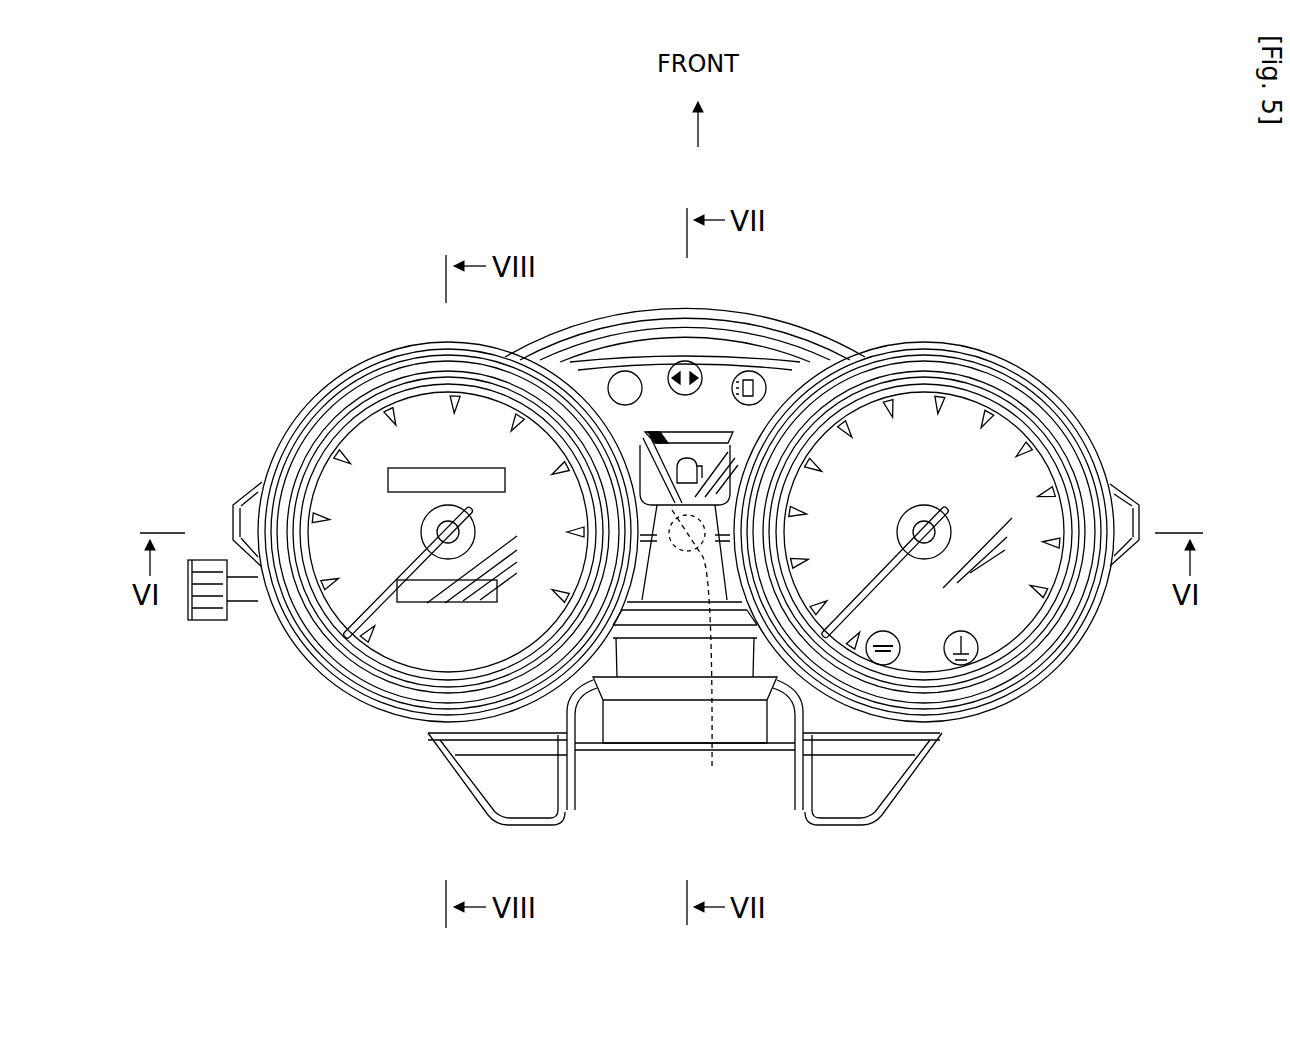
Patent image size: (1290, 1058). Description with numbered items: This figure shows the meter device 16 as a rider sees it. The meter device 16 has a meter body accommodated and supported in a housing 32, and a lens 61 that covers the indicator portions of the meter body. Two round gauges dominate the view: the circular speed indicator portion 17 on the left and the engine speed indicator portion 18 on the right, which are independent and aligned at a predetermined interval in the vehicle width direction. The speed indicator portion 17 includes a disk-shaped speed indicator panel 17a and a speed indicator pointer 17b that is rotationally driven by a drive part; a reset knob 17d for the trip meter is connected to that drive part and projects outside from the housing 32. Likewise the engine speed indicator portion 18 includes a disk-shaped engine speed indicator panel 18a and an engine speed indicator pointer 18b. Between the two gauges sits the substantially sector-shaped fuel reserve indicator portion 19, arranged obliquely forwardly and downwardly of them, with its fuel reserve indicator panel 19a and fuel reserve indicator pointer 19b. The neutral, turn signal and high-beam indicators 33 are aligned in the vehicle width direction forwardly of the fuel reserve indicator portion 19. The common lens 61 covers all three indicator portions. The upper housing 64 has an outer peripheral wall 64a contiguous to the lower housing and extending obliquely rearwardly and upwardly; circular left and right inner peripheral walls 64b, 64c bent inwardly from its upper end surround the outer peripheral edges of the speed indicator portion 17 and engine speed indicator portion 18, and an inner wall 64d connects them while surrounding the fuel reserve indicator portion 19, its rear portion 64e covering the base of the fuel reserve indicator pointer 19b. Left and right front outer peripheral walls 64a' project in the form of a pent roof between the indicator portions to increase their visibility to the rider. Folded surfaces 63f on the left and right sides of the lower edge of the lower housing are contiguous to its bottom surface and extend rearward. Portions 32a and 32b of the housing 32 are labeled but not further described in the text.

The meter device 16 is at (1033, 328).
The speed indicator portion 17 is at (350, 600).
The speed indicator panel 17a is at (402, 652).
The speed indicator pointer 17b is at (350, 642).
The reset knob 17d is at (205, 625).
The engine speed indicator portion 18 is at (1042, 482).
The engine speed indicator panel 18a is at (1007, 625).
The engine speed indicator pointer 18b is at (862, 602).
The fuel reserve indicator portion 19 is at (682, 574).
The fuel reserve indicator panel 19a is at (782, 368).
The fuel reserve indicator pointer 19b is at (712, 770).
The housing 32 is at (291, 391).
The upper hood portion of meter case 32a is at (675, 307).
The inner rim of meter case 32b is at (395, 345).
The indicators 33 is at (747, 371).
The lens 61 is at (481, 652).
The folded surfaces 63f is at (467, 802).
The upper housing 64 is at (340, 363).
The outer peripheral wall 64a is at (634, 483).
The front outer peripheral walls 64a' is at (686, 440).
The left inner peripheral wall 64b is at (306, 488).
The right inner peripheral wall 64c is at (1023, 460).
The inner wall 64d is at (605, 372).
The rear portion of inner wall 64e is at (660, 587).